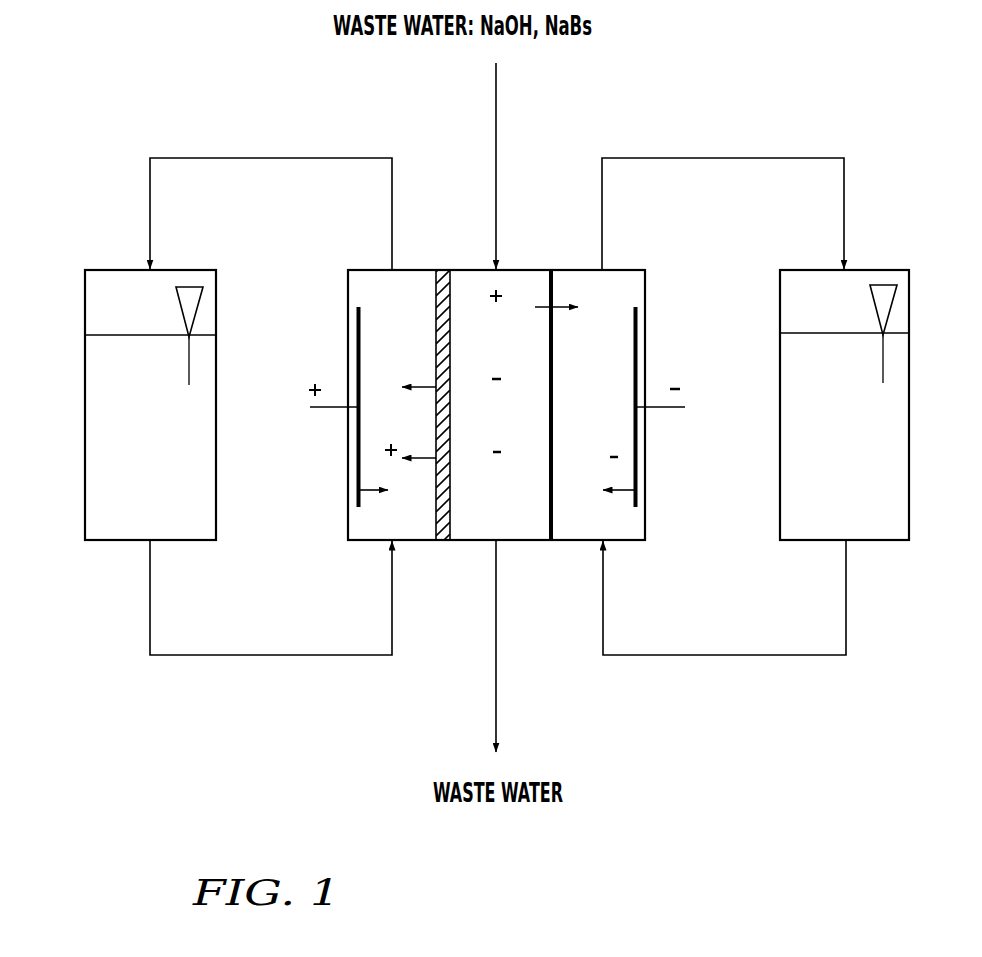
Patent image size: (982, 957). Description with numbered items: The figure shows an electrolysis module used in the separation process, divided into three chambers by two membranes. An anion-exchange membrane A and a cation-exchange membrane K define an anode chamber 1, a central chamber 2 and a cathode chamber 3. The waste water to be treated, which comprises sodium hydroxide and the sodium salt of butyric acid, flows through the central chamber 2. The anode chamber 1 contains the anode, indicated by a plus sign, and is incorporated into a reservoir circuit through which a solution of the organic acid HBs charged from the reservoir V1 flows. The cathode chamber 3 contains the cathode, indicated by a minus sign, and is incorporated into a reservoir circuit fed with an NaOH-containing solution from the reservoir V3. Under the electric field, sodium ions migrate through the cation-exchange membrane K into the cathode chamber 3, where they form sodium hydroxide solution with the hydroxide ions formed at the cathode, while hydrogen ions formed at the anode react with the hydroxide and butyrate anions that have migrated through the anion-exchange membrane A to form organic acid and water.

The anode chamber 1 is at (392, 405).
The central chamber 2 is at (514, 405).
The cathode chamber 3 is at (598, 405).
The anion-exchange membrane A is at (443, 387).
The cation-exchange membrane K is at (548, 383).
The reservoir V1 is at (150, 389).
The reservoir V3 is at (844, 389).